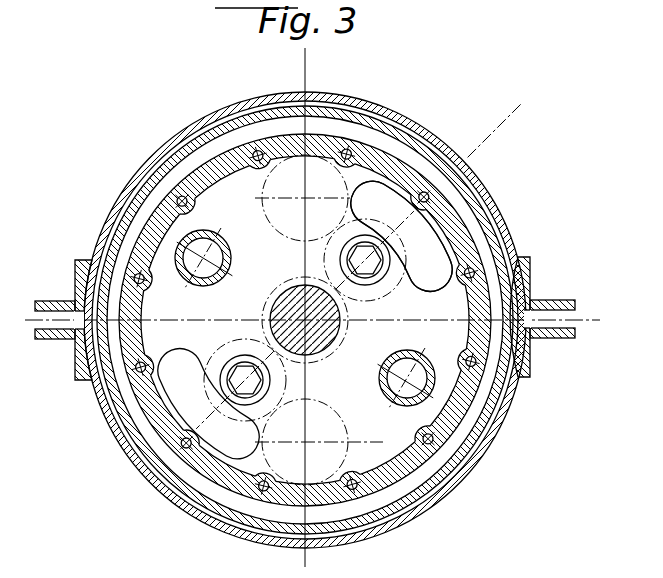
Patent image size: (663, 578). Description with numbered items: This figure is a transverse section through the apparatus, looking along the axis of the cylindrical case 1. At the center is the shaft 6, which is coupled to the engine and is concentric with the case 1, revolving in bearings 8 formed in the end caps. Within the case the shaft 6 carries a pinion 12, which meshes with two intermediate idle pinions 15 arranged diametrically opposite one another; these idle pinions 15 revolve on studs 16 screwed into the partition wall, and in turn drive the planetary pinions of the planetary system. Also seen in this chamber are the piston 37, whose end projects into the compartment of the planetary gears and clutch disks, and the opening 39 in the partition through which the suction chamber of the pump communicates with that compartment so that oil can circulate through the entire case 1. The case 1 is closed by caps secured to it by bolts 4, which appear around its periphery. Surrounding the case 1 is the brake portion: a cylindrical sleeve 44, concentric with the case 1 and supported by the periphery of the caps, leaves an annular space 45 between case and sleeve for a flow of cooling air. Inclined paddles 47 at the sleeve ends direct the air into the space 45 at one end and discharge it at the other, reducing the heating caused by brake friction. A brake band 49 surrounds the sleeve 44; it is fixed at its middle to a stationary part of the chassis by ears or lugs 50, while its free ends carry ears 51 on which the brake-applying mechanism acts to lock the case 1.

The cylindrical case 1 is at (478, 253).
The bolts 4 is at (185, 444).
The shaft 6 is at (287, 305).
The bearings 8 is at (359, 266).
The pinion 12 is at (344, 325).
The intermediate idle pinions 15 is at (396, 283).
The studs 16 is at (347, 258).
The piston 37 is at (452, 403).
The opening 39 is at (423, 243).
The cylindrical sleeve 44 is at (370, 108).
The annular space 45 is at (193, 160).
The paddles 47 is at (262, 189).
The brake band 49 is at (305, 308).
The ears or lugs 50 is at (40, 340).
The ears 51 is at (547, 340).